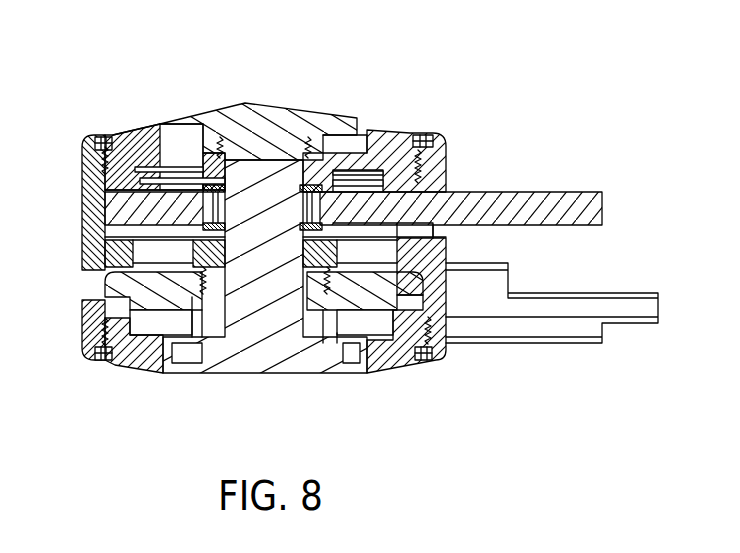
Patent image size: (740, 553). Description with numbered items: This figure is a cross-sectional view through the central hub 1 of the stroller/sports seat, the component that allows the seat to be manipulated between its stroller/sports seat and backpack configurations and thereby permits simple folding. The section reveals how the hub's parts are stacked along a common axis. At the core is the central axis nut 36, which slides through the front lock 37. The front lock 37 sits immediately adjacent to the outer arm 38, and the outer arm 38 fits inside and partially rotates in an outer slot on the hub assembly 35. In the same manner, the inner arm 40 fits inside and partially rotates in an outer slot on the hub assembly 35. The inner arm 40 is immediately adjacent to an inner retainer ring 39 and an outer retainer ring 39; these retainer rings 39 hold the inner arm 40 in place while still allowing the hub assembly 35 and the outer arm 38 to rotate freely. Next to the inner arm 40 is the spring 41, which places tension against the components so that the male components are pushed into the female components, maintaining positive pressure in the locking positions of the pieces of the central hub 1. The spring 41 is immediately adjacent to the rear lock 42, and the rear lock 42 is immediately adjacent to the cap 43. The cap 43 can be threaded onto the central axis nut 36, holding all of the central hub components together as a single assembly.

The central hub 1 is at (99, 50).
The hub assembly 35 is at (82, 179).
The central axis nut 36 is at (293, 362).
The front lock 37 is at (135, 355).
The outer arm 38 is at (82, 325).
The retainer ring 39 is at (216, 222).
The inner arm 40 is at (512, 205).
The spring 41 is at (158, 182).
The rear lock 42 is at (387, 142).
The cap 43 is at (300, 118).